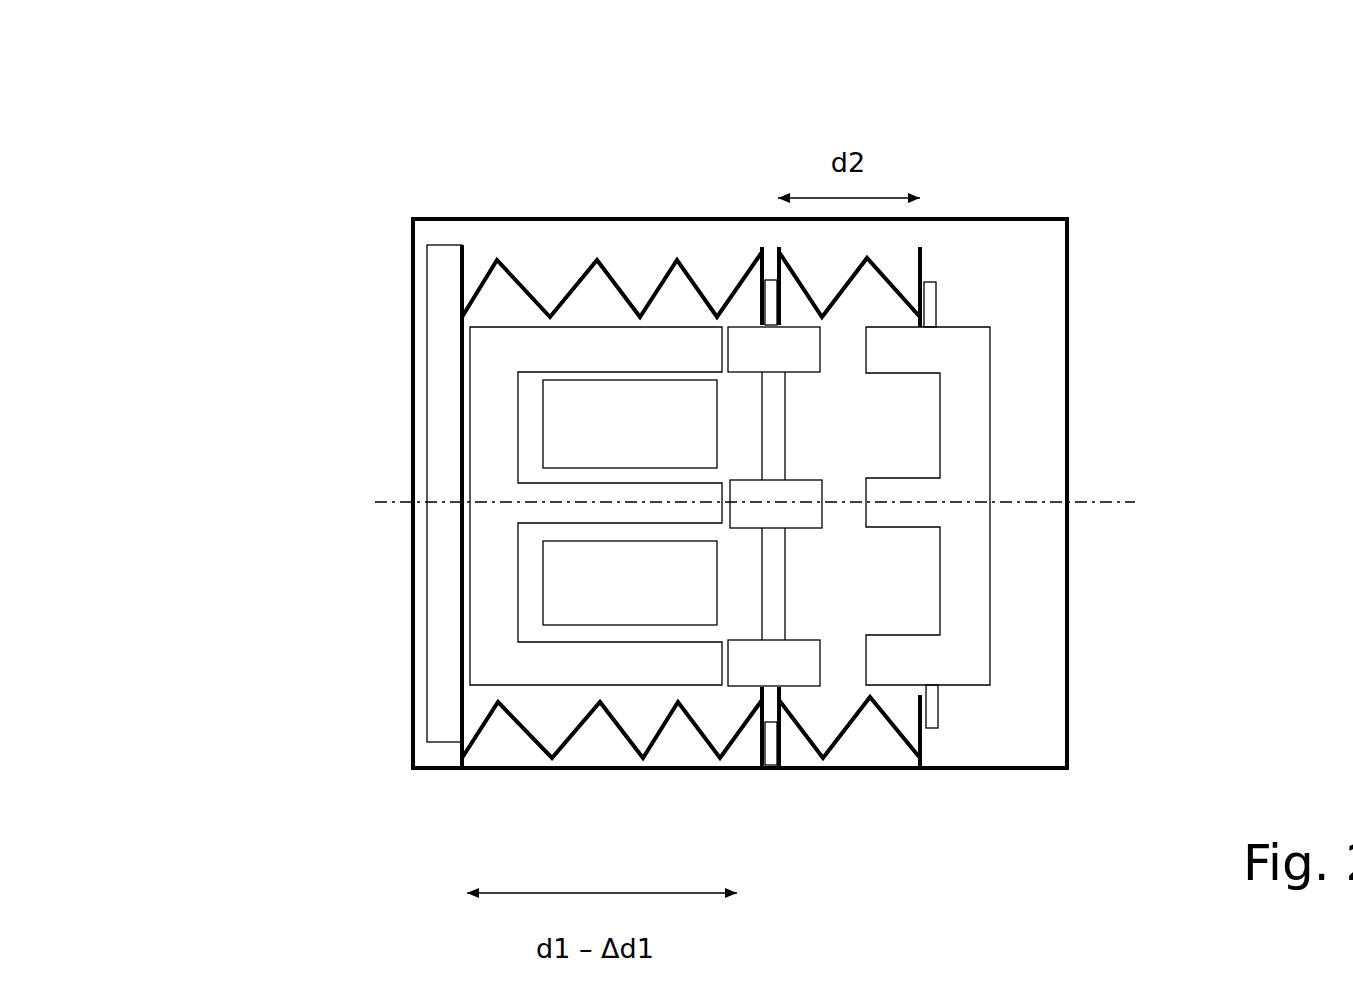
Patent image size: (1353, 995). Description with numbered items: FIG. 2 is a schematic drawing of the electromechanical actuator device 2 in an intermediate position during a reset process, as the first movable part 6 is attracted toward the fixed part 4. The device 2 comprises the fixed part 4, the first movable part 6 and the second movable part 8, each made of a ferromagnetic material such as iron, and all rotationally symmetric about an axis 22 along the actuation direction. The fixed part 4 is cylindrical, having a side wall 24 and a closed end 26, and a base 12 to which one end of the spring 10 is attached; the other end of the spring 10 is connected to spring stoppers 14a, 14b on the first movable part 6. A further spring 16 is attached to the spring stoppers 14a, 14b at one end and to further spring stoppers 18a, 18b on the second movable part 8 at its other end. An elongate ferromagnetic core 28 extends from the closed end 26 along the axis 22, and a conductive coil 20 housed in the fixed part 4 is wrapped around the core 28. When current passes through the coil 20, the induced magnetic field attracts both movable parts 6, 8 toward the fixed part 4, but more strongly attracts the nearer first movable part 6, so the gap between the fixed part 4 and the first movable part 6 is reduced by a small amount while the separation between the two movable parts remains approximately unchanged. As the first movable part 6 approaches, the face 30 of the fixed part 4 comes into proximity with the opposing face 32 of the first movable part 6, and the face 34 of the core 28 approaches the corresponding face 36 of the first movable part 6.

The electromechanical actuator device 2 is at (215, 178).
The fixed part 4 is at (727, 623).
The first movable part 6 is at (735, 312).
The second movable part 8 is at (1008, 380).
The spring 10 is at (575, 295).
The base 12 is at (445, 685).
The spring stopper 14a is at (764, 285).
The spring stopper 14b is at (773, 735).
The further spring 16 is at (923, 262).
The spring stopper 18a is at (936, 305).
The spring stopper 18b is at (940, 705).
The conductive coil 20 is at (597, 428).
The axis 22 is at (781, 497).
The side wall 24 is at (570, 345).
The closed end 26 is at (490, 625).
The core 28 is at (553, 512).
The face 30 is at (722, 345).
The face 32 is at (735, 350).
The face 34 is at (740, 511).
The face 36 is at (740, 511).